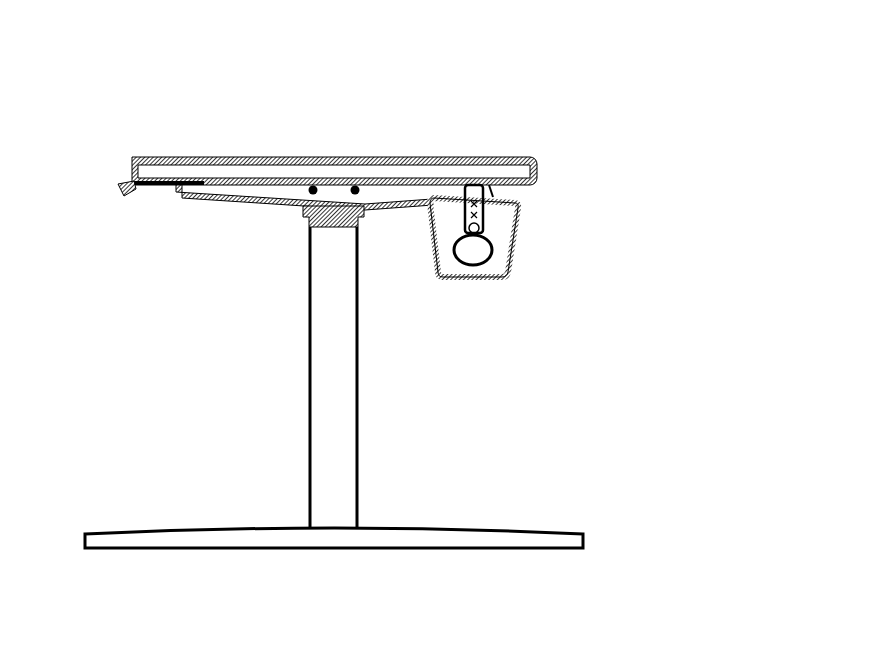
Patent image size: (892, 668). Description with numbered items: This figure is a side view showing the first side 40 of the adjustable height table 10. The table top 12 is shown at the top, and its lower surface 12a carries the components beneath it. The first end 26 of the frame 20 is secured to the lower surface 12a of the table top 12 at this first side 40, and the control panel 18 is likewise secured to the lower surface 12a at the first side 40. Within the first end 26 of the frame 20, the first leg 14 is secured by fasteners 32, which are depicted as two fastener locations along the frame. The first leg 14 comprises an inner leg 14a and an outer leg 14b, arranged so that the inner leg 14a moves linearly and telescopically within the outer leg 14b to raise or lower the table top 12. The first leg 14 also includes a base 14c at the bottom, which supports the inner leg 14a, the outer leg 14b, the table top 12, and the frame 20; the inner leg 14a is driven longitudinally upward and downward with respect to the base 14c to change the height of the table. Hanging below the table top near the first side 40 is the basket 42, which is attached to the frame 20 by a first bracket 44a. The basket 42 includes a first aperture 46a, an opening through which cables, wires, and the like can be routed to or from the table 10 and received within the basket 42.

The table 10 is at (521, 115).
The table top 12 is at (272, 157).
The lower surface 12a is at (527, 186).
The first leg 14 is at (360, 468).
The inner leg 14a is at (320, 222).
The outer leg 14b is at (314, 312).
The base 14c is at (535, 540).
The control panel 18 is at (130, 191).
The frame 20 is at (215, 192).
The first end 26 is at (398, 232).
The fasteners 32 is at (356, 187).
The first side 40 is at (564, 170).
The basket 42 is at (504, 242).
The first bracket 44a is at (488, 212).
The first aperture 46a is at (504, 270).